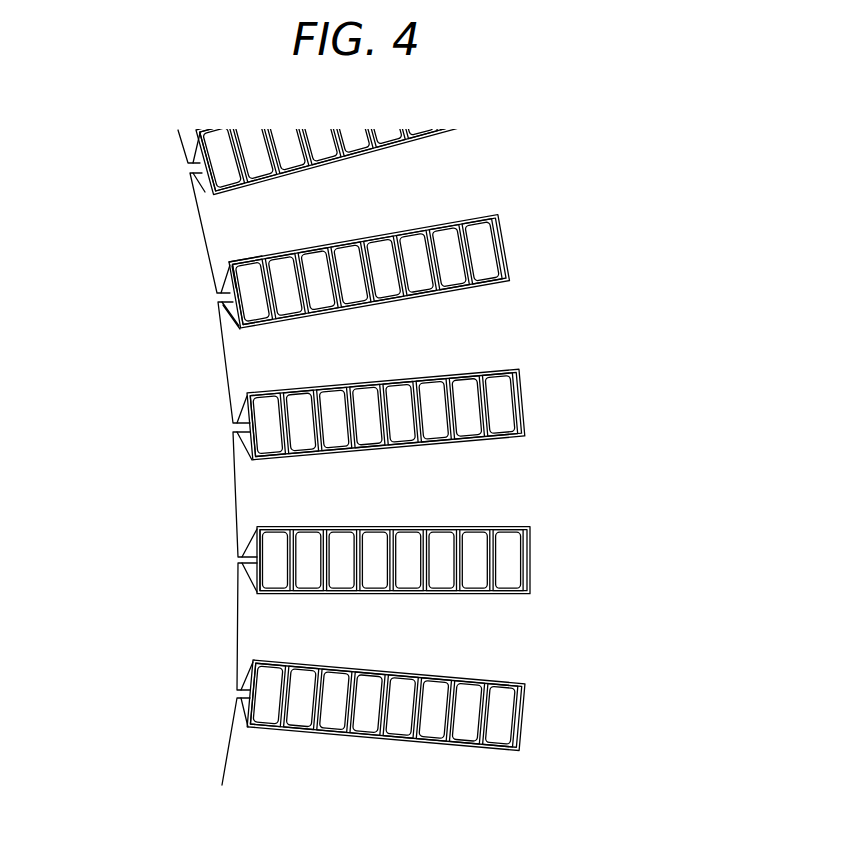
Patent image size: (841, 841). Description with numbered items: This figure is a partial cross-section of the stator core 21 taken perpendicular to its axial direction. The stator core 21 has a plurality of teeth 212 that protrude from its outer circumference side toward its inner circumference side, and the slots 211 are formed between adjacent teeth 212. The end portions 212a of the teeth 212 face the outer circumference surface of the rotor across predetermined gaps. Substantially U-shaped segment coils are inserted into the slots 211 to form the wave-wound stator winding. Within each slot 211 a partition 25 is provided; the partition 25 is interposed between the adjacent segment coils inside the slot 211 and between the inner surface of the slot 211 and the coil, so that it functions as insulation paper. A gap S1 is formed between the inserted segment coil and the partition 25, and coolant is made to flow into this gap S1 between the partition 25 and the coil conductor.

The stator core 21 is at (557, 494).
The slot 211 is at (463, 222).
The tooth 212 is at (445, 333).
The end portion of the tooth 212a is at (227, 370).
The partition 25 is at (263, 258).
The gap S1 is at (240, 323).